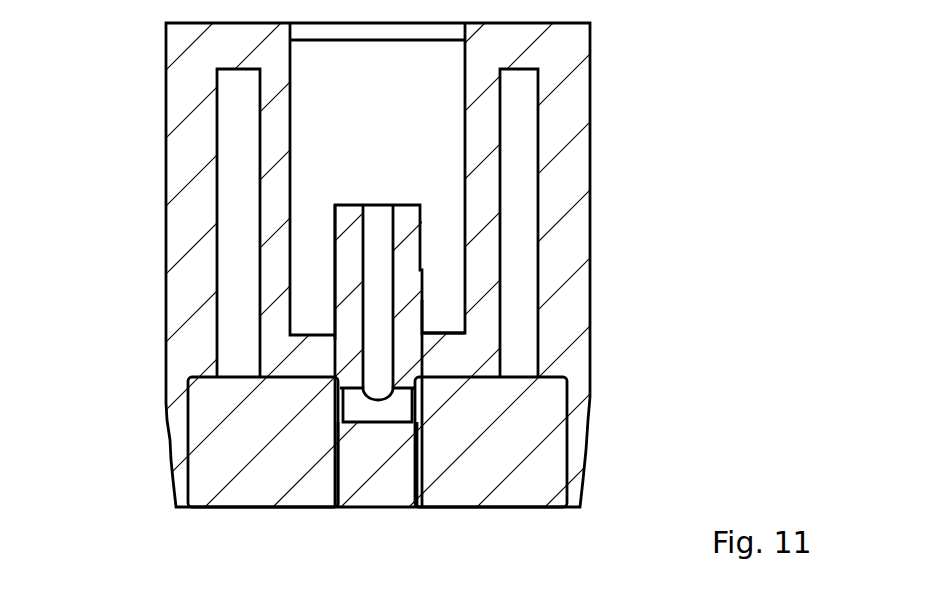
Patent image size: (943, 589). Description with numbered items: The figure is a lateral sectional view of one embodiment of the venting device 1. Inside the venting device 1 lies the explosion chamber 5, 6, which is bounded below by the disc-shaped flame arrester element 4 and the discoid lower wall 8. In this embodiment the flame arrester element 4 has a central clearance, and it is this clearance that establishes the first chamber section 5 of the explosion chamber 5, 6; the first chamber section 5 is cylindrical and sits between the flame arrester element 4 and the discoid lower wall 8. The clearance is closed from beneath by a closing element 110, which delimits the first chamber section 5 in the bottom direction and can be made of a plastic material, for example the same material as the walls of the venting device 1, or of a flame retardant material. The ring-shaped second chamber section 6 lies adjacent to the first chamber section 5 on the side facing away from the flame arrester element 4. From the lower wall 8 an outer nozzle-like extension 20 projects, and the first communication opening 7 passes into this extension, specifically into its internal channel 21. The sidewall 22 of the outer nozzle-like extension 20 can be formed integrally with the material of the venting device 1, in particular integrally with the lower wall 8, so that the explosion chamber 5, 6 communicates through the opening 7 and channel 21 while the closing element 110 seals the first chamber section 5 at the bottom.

The venting device 1 is at (110, 113).
The flame arrester element 4 is at (477, 482).
The first chamber section 5 is at (397, 403).
The second chamber section 6 is at (517, 188).
The first communication opening 7 is at (380, 386).
The discoid lower wall 8 is at (441, 328).
The outer nozzle-like extension 20 is at (352, 205).
The internal channel 21 is at (383, 238).
The sidewall 22 is at (352, 270).
The closing element 110 is at (367, 497).